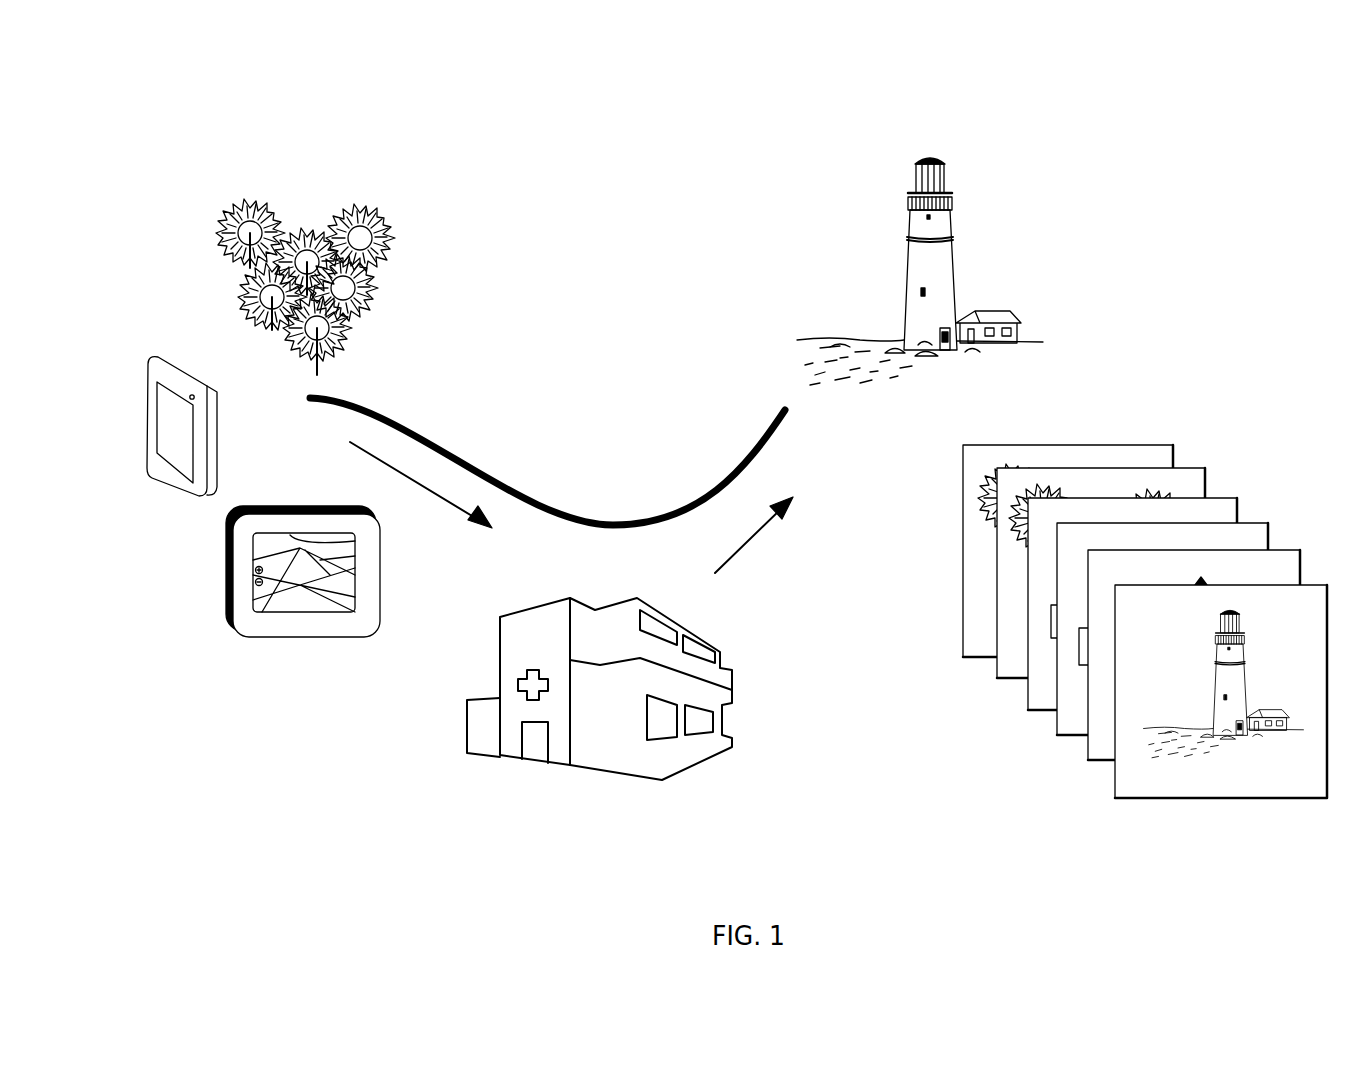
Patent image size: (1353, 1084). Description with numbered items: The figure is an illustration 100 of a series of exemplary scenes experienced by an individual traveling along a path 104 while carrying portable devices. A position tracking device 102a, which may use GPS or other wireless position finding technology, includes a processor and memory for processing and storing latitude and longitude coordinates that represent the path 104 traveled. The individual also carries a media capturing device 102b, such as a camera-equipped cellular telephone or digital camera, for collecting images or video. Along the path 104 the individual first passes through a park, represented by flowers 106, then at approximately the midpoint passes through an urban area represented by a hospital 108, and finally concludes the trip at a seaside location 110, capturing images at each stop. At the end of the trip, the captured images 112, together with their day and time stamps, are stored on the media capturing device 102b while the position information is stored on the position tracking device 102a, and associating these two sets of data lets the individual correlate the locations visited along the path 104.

The illustration 100 is at (160, 125).
The position tracking device 102a is at (222, 572).
The media capturing device 102b is at (147, 377).
The path 104 is at (458, 463).
The flowers 106 is at (293, 190).
The hospital 108 is at (480, 641).
The seaside location 110 is at (845, 185).
The captured images 112 is at (1252, 485).